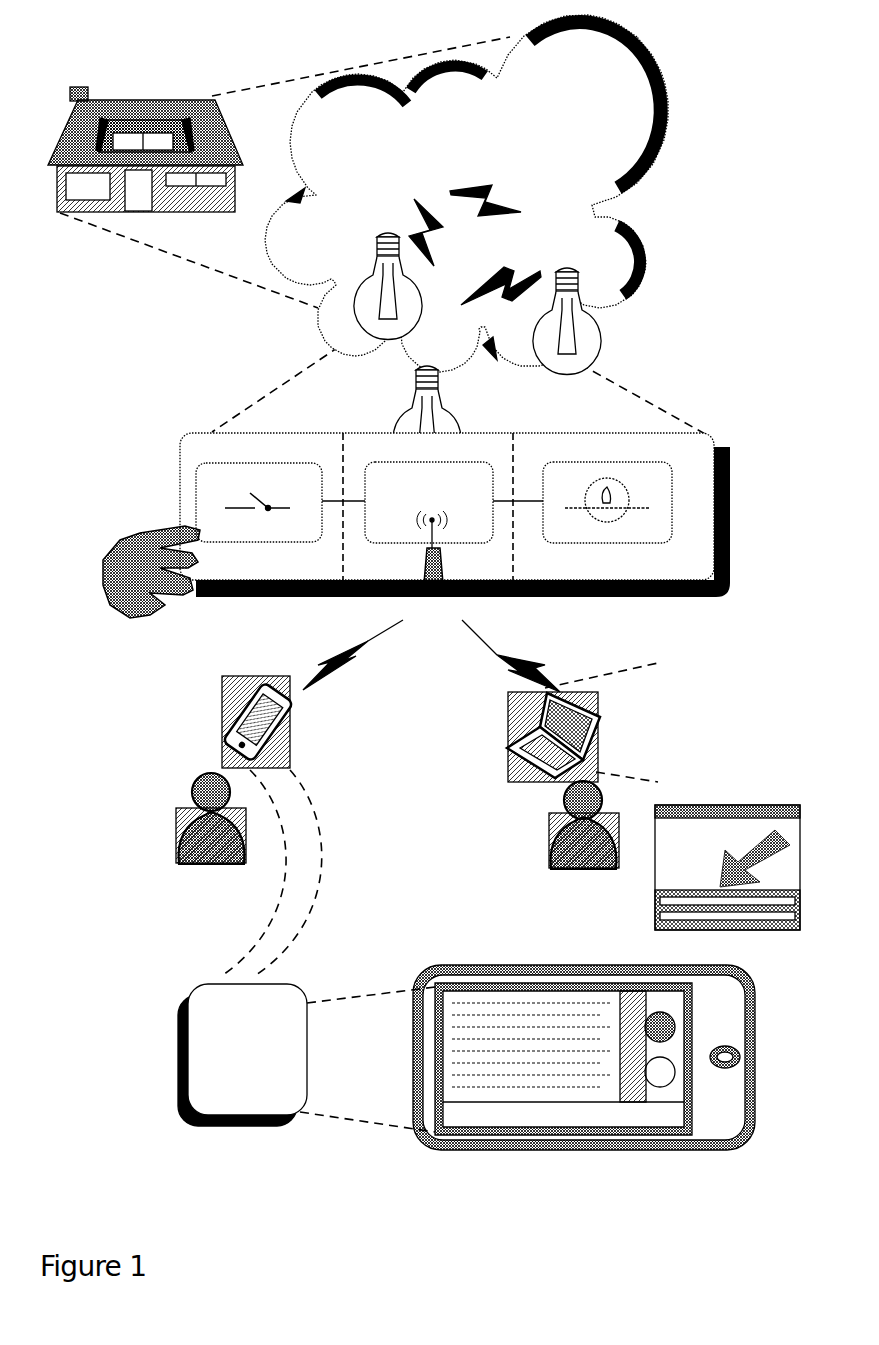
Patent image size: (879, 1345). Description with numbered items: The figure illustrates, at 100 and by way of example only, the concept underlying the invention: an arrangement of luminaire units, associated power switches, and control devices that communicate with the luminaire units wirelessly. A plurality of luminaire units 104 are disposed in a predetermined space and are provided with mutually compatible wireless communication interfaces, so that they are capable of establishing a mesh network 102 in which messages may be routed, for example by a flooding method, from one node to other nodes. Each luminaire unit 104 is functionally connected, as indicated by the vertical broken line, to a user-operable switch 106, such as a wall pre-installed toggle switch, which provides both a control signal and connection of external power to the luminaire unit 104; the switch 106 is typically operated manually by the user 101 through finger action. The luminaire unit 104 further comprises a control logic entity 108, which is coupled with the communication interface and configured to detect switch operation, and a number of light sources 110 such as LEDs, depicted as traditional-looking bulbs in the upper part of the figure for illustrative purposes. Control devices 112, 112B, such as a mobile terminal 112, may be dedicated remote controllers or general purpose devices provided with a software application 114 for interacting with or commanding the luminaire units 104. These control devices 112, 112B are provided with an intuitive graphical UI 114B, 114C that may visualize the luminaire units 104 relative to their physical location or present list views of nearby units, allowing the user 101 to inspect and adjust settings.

The concept arrangement of luminaire units, switches and control devices 100 is at (136, 42).
The user 101 is at (172, 830).
The mesh network 102 is at (600, 92).
The luminaire unit 104 is at (384, 150).
The user-operable switch 106 is at (282, 463).
The control logic entity 108 is at (478, 455).
The light source 110 is at (672, 500).
The control device 112 is at (220, 730).
The control device 112B is at (535, 731).
The software application 114 is at (188, 990).
The graphical UI 114B is at (722, 660).
The graphical UI 114C is at (708, 959).